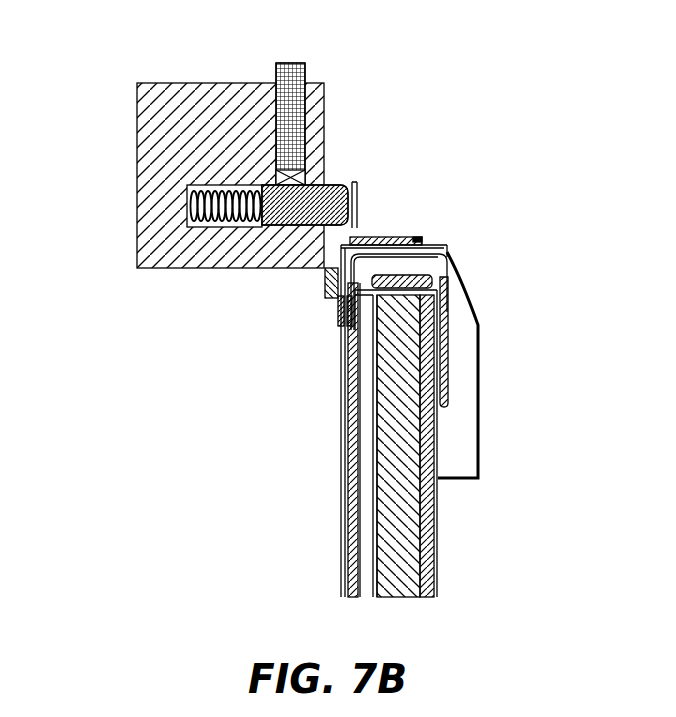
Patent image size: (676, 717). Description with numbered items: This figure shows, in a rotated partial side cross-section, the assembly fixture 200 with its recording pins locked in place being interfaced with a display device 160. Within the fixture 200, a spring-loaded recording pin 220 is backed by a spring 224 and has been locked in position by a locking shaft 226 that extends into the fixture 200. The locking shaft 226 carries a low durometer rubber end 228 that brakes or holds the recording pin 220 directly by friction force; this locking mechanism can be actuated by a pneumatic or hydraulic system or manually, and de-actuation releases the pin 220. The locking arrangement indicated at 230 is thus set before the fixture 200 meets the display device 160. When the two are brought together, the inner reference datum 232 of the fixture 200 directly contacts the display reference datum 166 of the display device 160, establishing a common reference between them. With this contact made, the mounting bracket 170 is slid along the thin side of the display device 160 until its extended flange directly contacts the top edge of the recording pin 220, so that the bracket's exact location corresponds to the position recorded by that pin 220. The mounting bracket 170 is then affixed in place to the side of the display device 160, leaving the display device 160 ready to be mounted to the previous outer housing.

The display device 160 is at (455, 427).
The display reference datum 166 is at (328, 271).
The mounting brackets 170 is at (423, 240).
The assembly fixture 200 is at (157, 160).
The recording pin 220 is at (281, 226).
The spring 224 is at (197, 214).
The locking shaft 226 is at (277, 72).
The low durometer rubber end 228 is at (281, 176).
The latch assembly 230 is at (217, 186).
The inner reference datum 232 is at (340, 234).